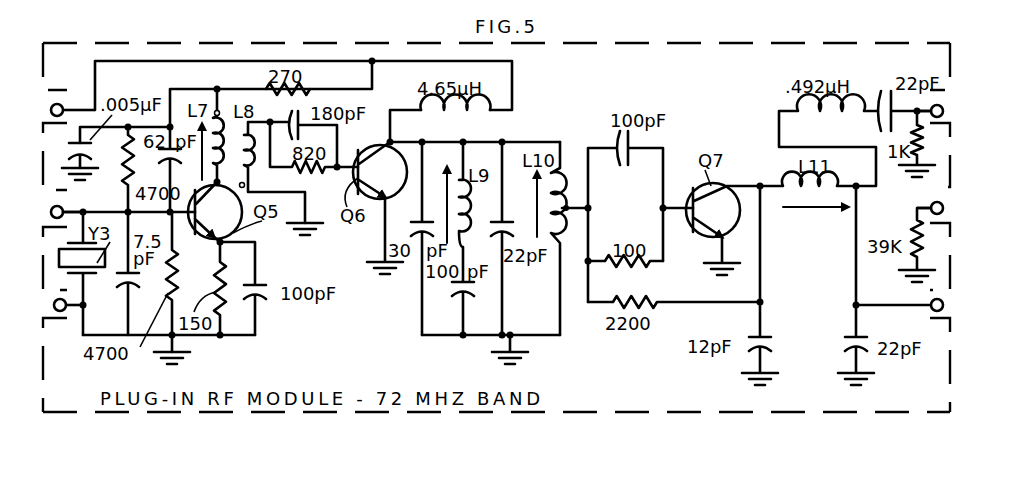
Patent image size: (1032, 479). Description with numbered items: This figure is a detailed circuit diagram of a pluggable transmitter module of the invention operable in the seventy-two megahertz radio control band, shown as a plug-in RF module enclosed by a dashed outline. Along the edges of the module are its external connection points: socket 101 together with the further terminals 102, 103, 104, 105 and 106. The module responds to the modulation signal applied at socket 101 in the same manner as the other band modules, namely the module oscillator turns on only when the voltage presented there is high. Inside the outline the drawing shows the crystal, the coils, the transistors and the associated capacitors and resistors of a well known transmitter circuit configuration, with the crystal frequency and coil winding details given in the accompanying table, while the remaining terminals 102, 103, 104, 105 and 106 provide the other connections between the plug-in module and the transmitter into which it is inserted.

The socket 101 is at (63, 104).
The RF output terminal 102 is at (940, 105).
The output terminal 103 is at (930, 204).
The output terminal 104 is at (930, 310).
The crystal/ground terminal 105 is at (64, 318).
The input terminal 106 is at (63, 207).